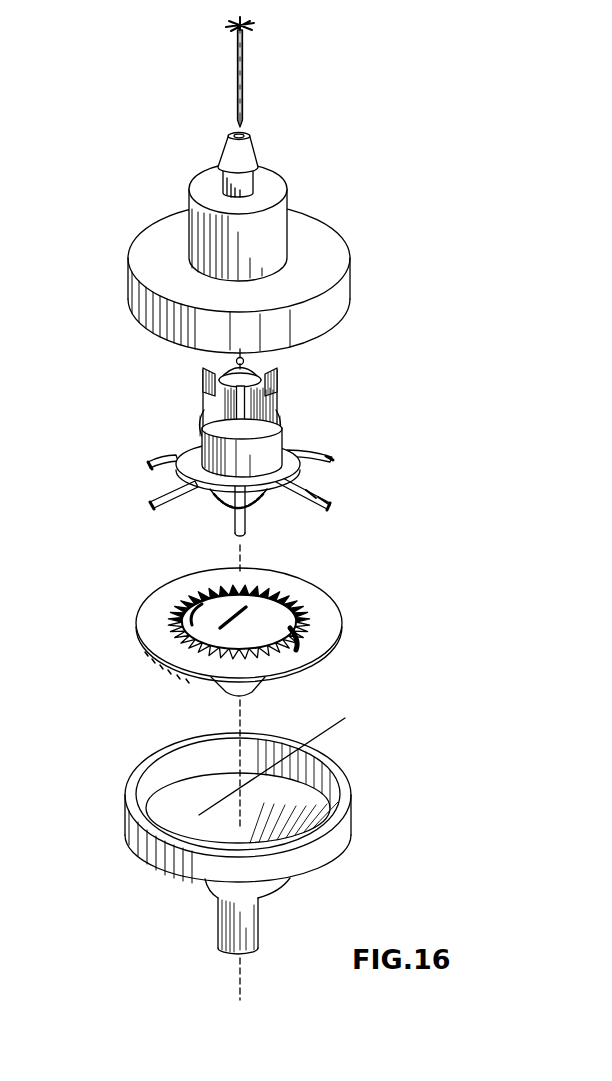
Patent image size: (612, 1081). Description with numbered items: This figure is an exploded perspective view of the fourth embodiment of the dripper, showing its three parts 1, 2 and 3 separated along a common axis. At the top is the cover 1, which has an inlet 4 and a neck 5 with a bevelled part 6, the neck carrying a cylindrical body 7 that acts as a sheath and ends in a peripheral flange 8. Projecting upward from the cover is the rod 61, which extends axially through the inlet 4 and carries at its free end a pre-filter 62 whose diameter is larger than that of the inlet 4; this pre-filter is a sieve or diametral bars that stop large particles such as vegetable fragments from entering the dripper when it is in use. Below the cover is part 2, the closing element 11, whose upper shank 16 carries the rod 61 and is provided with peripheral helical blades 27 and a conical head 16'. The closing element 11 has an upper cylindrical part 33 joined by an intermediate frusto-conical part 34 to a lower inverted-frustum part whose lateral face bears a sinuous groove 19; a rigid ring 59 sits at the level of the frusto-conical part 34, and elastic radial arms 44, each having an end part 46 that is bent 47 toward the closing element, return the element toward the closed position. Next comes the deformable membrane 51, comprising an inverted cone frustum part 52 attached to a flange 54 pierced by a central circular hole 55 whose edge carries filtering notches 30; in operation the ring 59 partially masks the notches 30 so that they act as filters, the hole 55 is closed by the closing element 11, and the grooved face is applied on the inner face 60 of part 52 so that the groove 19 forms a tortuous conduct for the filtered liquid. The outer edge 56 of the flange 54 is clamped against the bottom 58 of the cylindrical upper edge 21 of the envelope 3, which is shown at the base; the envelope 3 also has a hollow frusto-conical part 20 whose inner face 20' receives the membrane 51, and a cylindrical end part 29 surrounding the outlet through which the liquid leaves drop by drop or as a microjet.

The cover 1 is at (349, 287).
The part 2 is at (283, 425).
The envelope 3 is at (150, 844).
The inlet 4 is at (246, 133).
The neck 5 is at (256, 186).
The bevelled part 6 is at (259, 153).
The cylindrical body 7 is at (288, 202).
The peripheral flange 8 is at (335, 250).
The closing element 11 is at (200, 437).
The upper shank 16 is at (195, 412).
The conical head 16' is at (284, 357).
The sinuous groove 19 is at (223, 508).
The hollow frusto-conical part 20 is at (250, 889).
The inner face 20' is at (286, 758).
The cylindrical upper edge 21 is at (349, 823).
The peripheral helical blades 27 is at (272, 381).
The cylindrical end part 29 is at (258, 927).
The filtering notches 30 is at (292, 646).
The upper cylindrical part 33 is at (275, 442).
The intermediate frusto-conical part 34 is at (293, 467).
The elastic radial arms 44 is at (293, 478).
The end part 46 is at (333, 497).
The bend 47 is at (312, 496).
The deformable membrane 51 is at (284, 666).
The inverted cone frustum part 52 is at (226, 684).
The flange 54 is at (329, 629).
The central circular hole 55 is at (272, 595).
The outer edge 56 is at (164, 655).
The bottom 58 is at (307, 788).
The rigid ring 59 is at (182, 468).
The inner face 60 is at (200, 592).
The rod 61 is at (243, 93).
The pre-filter 62 is at (256, 27).